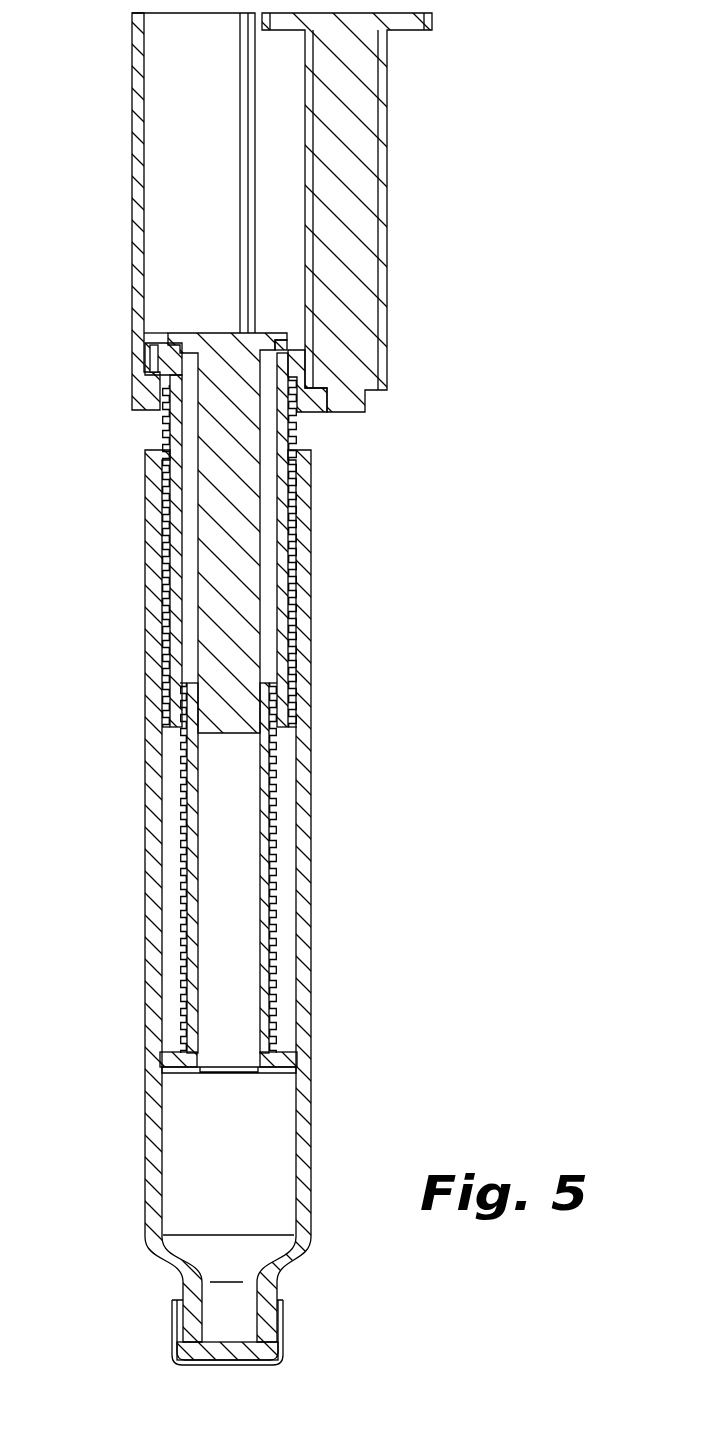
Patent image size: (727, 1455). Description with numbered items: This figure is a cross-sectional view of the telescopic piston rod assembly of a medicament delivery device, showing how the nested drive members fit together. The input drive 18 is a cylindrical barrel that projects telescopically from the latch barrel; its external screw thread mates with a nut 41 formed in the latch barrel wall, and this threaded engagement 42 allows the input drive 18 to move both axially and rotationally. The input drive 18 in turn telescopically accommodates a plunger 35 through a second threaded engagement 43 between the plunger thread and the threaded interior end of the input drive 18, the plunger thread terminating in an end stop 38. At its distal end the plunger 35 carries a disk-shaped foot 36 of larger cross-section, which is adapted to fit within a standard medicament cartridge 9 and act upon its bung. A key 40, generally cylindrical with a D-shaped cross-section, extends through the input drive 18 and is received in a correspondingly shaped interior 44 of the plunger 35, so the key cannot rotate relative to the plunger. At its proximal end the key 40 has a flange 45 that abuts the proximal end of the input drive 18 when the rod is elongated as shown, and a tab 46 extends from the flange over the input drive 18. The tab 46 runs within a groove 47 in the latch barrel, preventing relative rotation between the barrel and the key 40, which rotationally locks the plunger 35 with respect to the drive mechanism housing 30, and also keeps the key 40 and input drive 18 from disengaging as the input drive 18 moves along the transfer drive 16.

The medicament cartridge 9 is at (305, 971).
The transfer drive 16 is at (355, 115).
The input drive 18 is at (170, 597).
The drive mechanism housing 30 is at (178, 95).
The plunger 35 is at (222, 852).
The foot 36 is at (172, 1052).
The end stop 38 is at (268, 1050).
The key 40 is at (232, 628).
The nut 41 is at (163, 392).
The threaded engagement 42 is at (310, 410).
The threaded engagement 43 is at (262, 716).
The interior 44 is at (240, 882).
The flange 45 is at (287, 336).
The tab 46 is at (165, 333).
The groove 47 is at (243, 150).